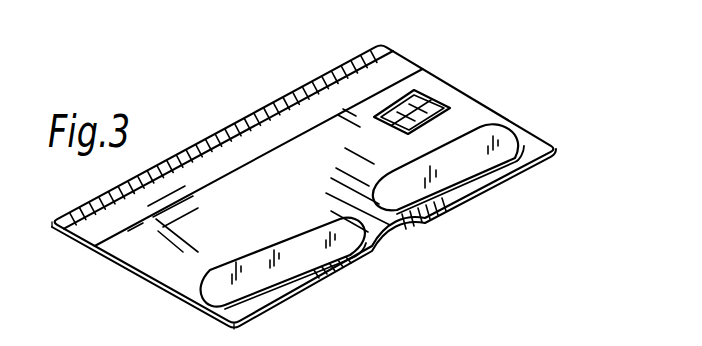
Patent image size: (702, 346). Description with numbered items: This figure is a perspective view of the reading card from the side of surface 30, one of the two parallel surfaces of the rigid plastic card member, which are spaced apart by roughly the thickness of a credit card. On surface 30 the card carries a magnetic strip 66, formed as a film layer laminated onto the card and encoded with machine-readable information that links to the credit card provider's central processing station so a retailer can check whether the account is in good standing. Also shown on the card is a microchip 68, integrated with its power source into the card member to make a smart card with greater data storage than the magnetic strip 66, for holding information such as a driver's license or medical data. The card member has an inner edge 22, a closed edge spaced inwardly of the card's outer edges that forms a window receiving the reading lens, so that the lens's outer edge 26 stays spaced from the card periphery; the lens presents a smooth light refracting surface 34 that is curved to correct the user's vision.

The inner edge 22 is at (546, 168).
The outer edge of the reading lens 26 is at (487, 166).
The surface 30 is at (262, 214).
The light refracting surface 34 is at (432, 168).
The magnetic strip 66 is at (319, 107).
The microchip 68 is at (449, 97).